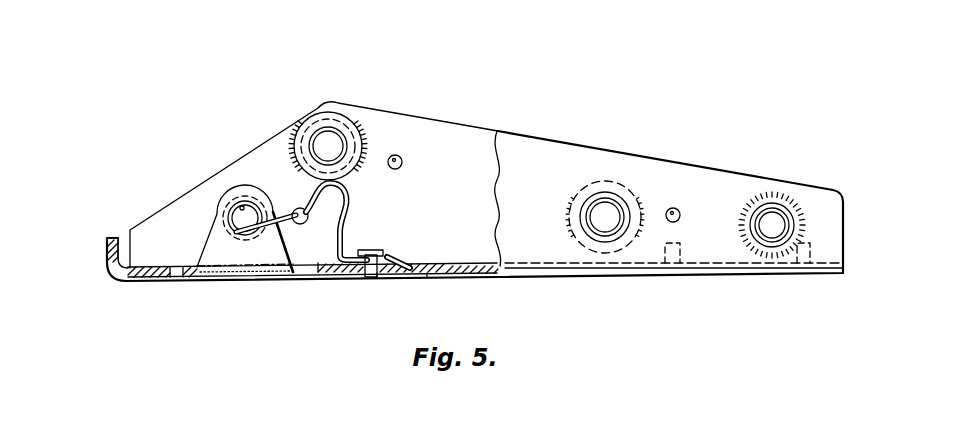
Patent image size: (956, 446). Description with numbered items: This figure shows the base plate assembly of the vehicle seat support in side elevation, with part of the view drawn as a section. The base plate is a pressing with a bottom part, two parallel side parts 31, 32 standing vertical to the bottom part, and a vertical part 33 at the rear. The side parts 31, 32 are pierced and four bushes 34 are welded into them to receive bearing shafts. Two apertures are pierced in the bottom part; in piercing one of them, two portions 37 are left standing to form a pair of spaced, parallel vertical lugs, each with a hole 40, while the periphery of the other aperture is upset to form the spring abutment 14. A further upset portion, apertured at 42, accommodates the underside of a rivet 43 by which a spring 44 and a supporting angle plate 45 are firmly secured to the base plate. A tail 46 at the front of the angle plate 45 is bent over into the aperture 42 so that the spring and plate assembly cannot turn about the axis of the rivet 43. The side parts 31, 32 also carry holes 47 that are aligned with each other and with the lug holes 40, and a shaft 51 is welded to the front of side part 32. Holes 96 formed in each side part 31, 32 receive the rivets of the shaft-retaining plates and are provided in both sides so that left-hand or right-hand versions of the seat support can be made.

The spring abutment 14 is at (681, 265).
The side part 31 is at (474, 134).
The side part 32 is at (548, 148).
The vertical part 33 is at (112, 237).
The bush 34 is at (335, 115).
The lug 37 is at (213, 245).
The hole 40 is at (242, 208).
The aperture 42 is at (432, 272).
The rivet 43 is at (375, 277).
The spring 44 is at (277, 227).
The supporting angle plate 45 is at (347, 247).
The tail 46 is at (388, 254).
The hole 47 is at (253, 200).
The shaft 51 is at (777, 208).
The hole 96 is at (393, 158).